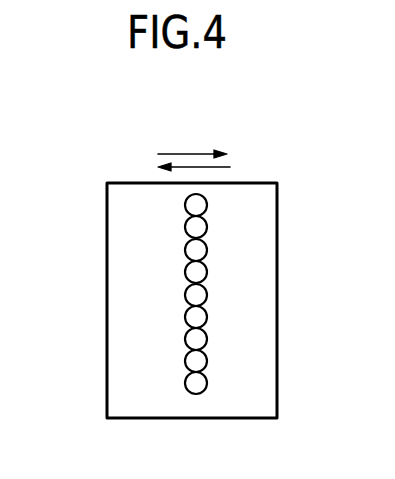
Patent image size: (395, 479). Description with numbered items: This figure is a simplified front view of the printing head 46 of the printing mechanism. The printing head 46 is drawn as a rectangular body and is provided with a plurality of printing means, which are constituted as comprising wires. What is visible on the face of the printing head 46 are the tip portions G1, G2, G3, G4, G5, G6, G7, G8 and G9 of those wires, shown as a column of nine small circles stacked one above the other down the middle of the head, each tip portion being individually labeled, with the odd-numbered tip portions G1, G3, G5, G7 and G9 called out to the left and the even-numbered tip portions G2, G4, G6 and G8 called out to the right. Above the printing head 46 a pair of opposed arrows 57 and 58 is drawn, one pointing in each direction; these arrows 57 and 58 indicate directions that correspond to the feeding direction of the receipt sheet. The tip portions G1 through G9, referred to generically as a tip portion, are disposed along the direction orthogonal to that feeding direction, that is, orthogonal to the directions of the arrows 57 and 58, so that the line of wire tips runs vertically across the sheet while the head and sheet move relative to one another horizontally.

The printing head 46 is at (258, 404).
The arrow 57 is at (217, 153).
The arrow 58 is at (187, 166).
The tip portion G1 is at (187, 204).
The tip portion G2 is at (204, 227).
The tip portion G3 is at (187, 250).
The tip portion G4 is at (204, 272).
The tip portion G5 is at (187, 296).
The tip portion G6 is at (204, 316).
The tip portion G7 is at (187, 340).
The tip portion G8 is at (204, 360).
The tip portion G9 is at (187, 383).